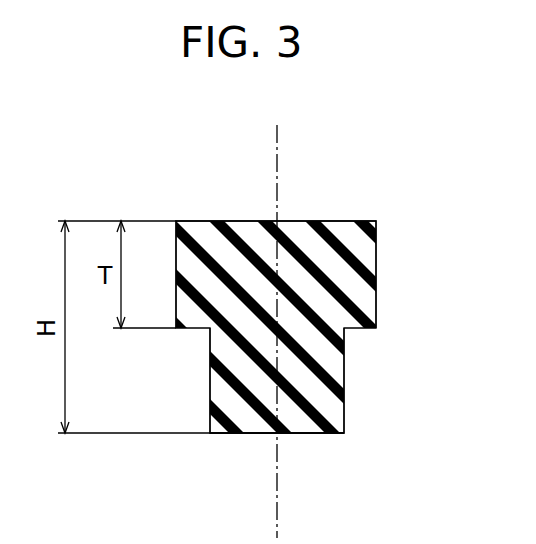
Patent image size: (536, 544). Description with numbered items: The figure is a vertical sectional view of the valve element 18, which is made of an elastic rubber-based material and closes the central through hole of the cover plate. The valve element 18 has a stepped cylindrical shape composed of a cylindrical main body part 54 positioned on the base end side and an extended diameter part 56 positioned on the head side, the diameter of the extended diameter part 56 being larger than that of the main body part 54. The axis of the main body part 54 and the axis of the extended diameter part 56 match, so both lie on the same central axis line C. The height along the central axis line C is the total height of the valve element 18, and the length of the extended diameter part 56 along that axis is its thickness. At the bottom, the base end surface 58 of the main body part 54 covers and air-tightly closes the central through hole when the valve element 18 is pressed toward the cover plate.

The valve element 18 is at (220, 222).
The extended diameter part 56 is at (377, 265).
The main body part 54 is at (345, 375).
The base end surface 58 is at (243, 433).
The central axis line C is at (277, 153).